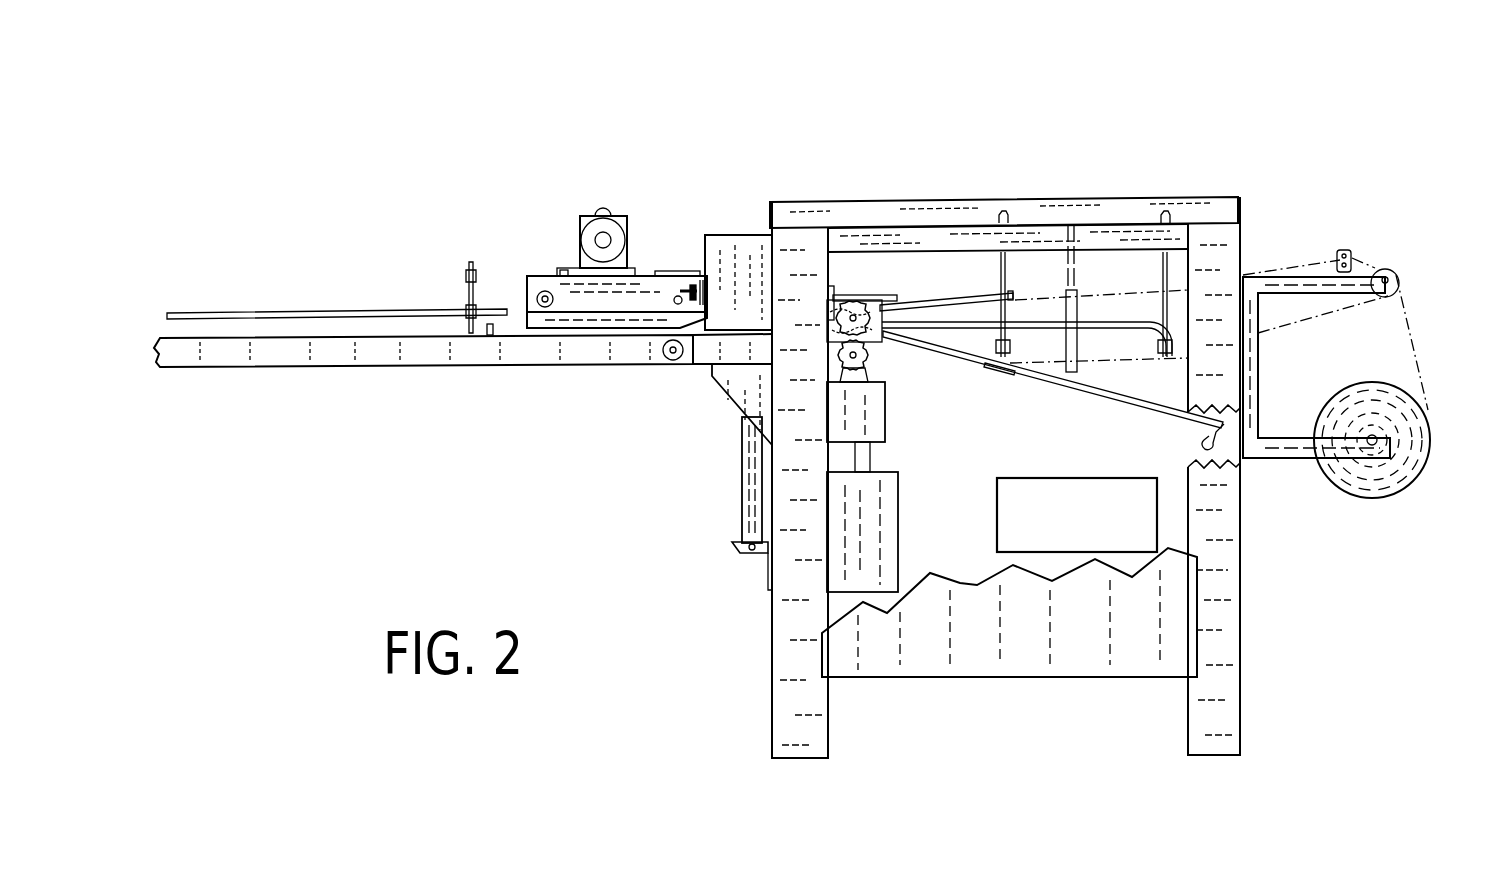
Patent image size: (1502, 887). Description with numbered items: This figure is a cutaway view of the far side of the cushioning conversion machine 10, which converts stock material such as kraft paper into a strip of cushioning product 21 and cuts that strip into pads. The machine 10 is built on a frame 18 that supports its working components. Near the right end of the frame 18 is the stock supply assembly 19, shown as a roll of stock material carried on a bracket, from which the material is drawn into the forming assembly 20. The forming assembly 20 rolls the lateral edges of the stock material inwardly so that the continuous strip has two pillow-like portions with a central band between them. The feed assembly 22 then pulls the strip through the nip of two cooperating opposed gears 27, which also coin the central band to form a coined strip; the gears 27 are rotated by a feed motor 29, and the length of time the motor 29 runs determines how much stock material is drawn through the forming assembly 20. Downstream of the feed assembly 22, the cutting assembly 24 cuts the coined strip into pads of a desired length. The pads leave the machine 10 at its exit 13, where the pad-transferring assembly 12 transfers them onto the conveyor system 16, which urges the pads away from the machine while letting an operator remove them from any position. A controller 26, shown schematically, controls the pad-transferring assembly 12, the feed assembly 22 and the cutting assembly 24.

The cushioning conversion machine 10 is at (1062, 392).
The pad-transferring assembly 12 is at (565, 295).
The exit 13 is at (668, 250).
The conveyor system 16 is at (456, 380).
The frame 18 is at (1224, 204).
The stock supply assembly 19 is at (1425, 312).
The forming assembly 20 is at (1132, 318).
The strip of cushioning product 21 is at (823, 327).
The feed assembly 22 is at (863, 283).
The cutting assembly 24 is at (731, 500).
The controller 26 is at (1063, 552).
The opposed gears 27 is at (882, 342).
The feed motor 29 is at (865, 555).